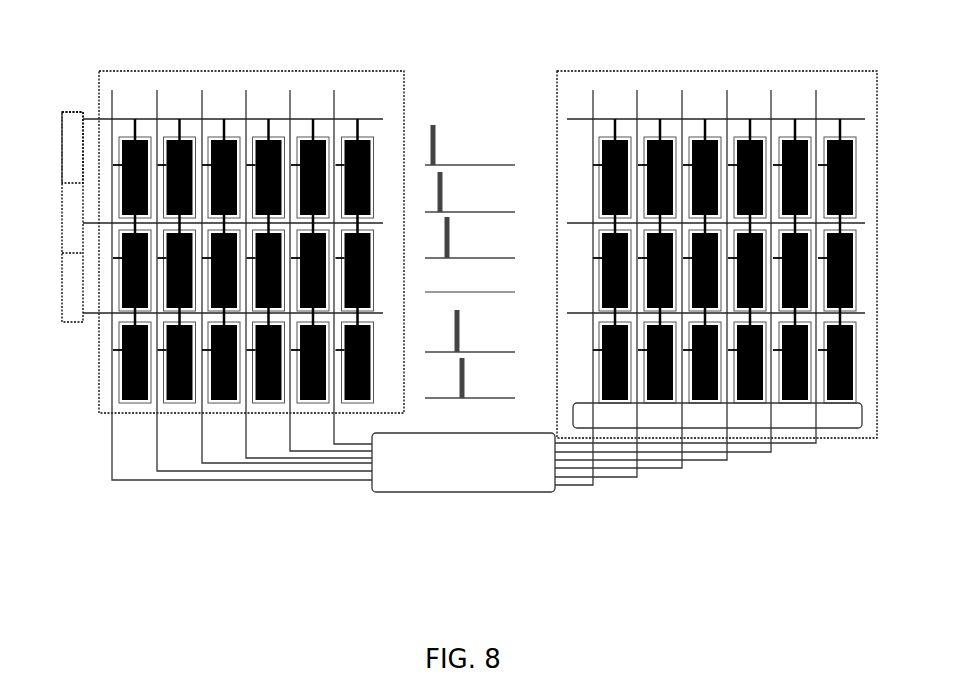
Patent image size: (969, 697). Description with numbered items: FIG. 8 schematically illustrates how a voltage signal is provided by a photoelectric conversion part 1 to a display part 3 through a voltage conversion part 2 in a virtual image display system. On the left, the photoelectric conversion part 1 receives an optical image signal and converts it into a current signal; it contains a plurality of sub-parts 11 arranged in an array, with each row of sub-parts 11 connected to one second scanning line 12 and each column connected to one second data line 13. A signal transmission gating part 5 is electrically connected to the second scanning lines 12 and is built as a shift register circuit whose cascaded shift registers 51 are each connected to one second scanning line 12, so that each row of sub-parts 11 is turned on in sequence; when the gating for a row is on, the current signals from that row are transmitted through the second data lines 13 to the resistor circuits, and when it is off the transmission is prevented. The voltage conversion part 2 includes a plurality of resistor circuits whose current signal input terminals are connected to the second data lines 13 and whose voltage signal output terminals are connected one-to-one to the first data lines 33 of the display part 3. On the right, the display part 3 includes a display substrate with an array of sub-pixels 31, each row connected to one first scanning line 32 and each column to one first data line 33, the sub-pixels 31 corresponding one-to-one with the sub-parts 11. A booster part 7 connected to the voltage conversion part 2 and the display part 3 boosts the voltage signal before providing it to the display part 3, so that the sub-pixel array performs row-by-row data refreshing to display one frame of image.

The photoelectric conversion part 1 is at (363, 70).
The sub-part 11 is at (122, 183).
The second scanning line 12 is at (90, 113).
The second data line 13 is at (155, 100).
The signal transmission gating part 5 is at (65, 321).
The shift register 51 is at (72, 138).
The voltage conversion part 2 is at (495, 492).
The display part 3 is at (843, 71).
The sub-pixel 31 is at (857, 160).
The first scanning line 32 is at (570, 113).
The first data line 33 is at (637, 97).
The booster part 7 is at (862, 413).